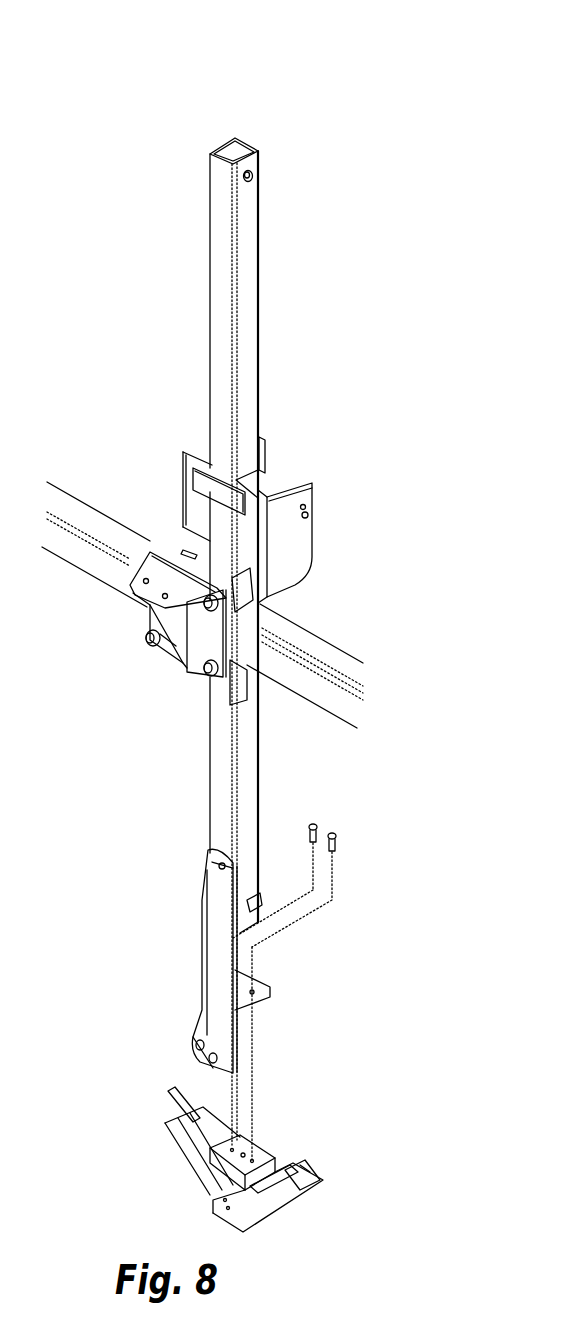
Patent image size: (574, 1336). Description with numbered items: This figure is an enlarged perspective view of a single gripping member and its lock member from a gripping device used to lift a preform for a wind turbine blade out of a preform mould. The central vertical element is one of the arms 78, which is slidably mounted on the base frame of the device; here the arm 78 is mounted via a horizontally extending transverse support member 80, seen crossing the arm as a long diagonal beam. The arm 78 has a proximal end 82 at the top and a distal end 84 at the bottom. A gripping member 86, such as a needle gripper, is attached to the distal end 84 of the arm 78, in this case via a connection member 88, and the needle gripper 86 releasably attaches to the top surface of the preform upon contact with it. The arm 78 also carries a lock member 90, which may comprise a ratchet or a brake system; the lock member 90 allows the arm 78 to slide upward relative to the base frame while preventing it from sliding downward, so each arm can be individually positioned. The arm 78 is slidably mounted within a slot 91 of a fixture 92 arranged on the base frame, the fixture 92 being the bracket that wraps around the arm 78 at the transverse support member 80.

The arm 78 is at (280, 246).
The transverse support member 80 is at (97, 525).
The proximal end 82 is at (233, 140).
The distal end 84 is at (257, 914).
The gripping member 86 is at (270, 1148).
The connection member 88 is at (210, 990).
The lock member 90 is at (283, 500).
The slot 91 is at (220, 482).
The fixture 92 is at (267, 473).